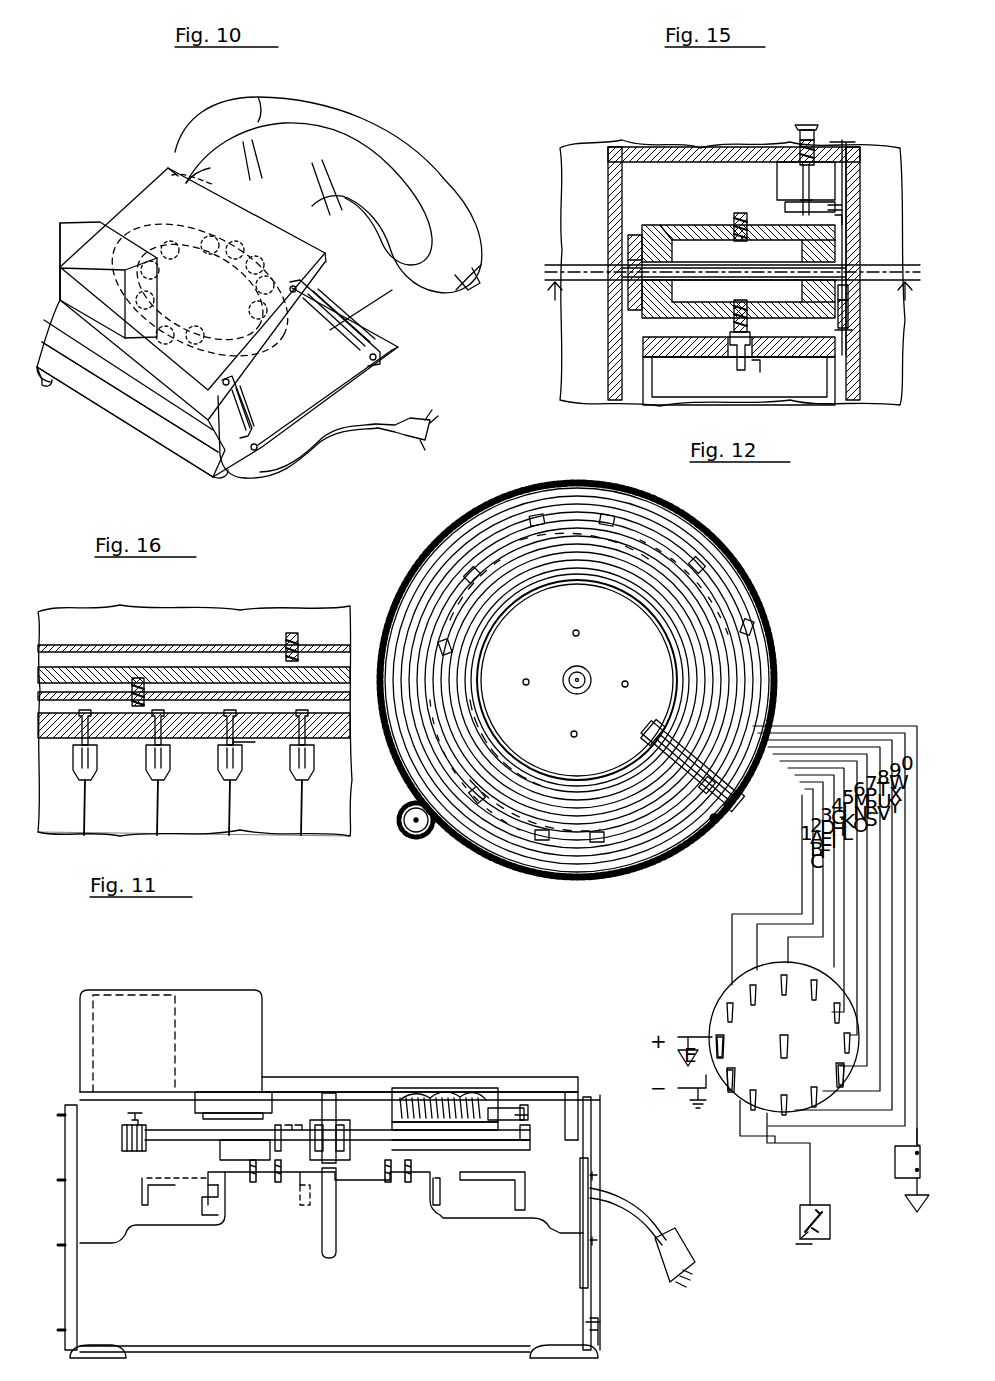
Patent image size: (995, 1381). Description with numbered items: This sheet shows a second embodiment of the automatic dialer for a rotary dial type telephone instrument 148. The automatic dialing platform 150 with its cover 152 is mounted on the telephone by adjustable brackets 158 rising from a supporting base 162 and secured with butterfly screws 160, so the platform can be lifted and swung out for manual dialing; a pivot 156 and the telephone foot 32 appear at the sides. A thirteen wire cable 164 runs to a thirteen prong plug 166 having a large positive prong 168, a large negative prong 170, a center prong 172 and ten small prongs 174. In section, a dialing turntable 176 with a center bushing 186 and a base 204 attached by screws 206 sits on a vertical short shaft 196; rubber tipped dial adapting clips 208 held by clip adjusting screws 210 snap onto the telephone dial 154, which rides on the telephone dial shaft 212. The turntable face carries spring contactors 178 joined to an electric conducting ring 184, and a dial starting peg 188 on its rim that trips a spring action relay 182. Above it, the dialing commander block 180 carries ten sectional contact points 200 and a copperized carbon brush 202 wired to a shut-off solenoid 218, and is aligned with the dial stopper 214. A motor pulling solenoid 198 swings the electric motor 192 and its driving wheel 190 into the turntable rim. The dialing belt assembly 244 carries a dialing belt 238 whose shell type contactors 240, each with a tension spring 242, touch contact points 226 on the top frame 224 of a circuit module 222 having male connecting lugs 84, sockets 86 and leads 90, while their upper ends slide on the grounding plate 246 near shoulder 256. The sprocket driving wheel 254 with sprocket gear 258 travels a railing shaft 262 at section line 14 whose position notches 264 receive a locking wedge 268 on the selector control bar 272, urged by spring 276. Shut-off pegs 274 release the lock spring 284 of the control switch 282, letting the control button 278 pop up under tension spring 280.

In FIG. 15, the section line 14 is at (731, 302).
In FIG. 10, the foot 32 is at (42, 385).
In FIG. 11, the foot 32 is at (105, 1350).
In FIG. 15, the male connecting lug 84 is at (762, 378).
In FIG. 16, the male connecting lug 84 is at (258, 745).
In FIG. 16, the pin socket 86 is at (168, 762).
In FIG. 16, the wire lead 90 is at (304, 795).
In FIG. 10, the dial type telephone instrument 148 is at (118, 388).
In FIG. 11, the dial type telephone instrument 148 is at (560, 1297).
In FIG. 10, the automatic dialing platform 150 is at (178, 400).
In FIG. 11, the automatic dialing platform 150 is at (558, 1078).
In FIG. 10, the cover 152 is at (175, 192).
In FIG. 11, the cover 152 is at (248, 998).
In FIG. 10, the telephone dial 154 is at (182, 248).
In FIG. 12, the telephone dial 154 is at (632, 520).
In FIG. 11, the telephone dial 154 is at (170, 1185).
In FIG. 10, the pivot pin 156 is at (294, 283).
In FIG. 11, the pivot pin 156 is at (596, 1098).
In FIG. 10, the adjustable brackets 158 is at (352, 325).
In FIG. 11, the adjustable brackets 158 is at (592, 1198).
In FIG. 10, the butterfly screws 160 is at (345, 335).
In FIG. 11, the butterfly screws 160 is at (594, 1176).
In FIG. 10, the supporting base 162 is at (372, 365).
In FIG. 11, the supporting base 162 is at (600, 1345).
In FIG. 10, the wire cable 164 is at (292, 458).
In FIG. 11, the wire cable 164 is at (630, 1222).
In FIG. 10, the thirteen prong plug 166 is at (428, 426).
In FIG. 12, the thirteen prong plug 166 is at (722, 1025).
In FIG. 11, the thirteen prong plug 166 is at (688, 1252).
In FIG. 12, the large prong 168 is at (724, 1045).
In FIG. 12, the large prong 170 is at (735, 1075).
In FIG. 12, the center prong 172 is at (788, 1045).
In FIG. 12, the small prongs 174 is at (838, 1075).
In FIG. 12, the dialing turntable 176 is at (758, 522).
In FIG. 11, the dialing turntable 176 is at (522, 1138).
In FIG. 12, the spring contactor 178 is at (752, 630).
In FIG. 11, the spring contactor 178 is at (280, 1135).
In FIG. 12, the dialing commander block 180 is at (648, 730).
In FIG. 11, the dialing commander block 180 is at (490, 1085).
In FIG. 11, the spring action relay 182 is at (505, 1105).
In FIG. 12, the electric conducting ring 184 is at (680, 668).
In FIG. 12, the bushing 186 is at (590, 672).
In FIG. 11, the bushing 186 is at (345, 1108).
In FIG. 12, the dial starting peg 188 is at (720, 830).
In FIG. 11, the dial starting peg 188 is at (532, 1125).
In FIG. 12, the driving wheel 190 is at (425, 835).
In FIG. 11, the driving wheel 190 is at (126, 1153).
In FIG. 11, the electric motor 192 is at (160, 1002).
In FIG. 11, the vertical short shaft 196 is at (330, 1100).
In FIG. 11, the motor pulling solenoid 198 is at (232, 1095).
In FIG. 12, the sectional contact points 200 is at (695, 790).
In FIG. 11, the sectional contact points 200 is at (470, 1152).
In FIG. 11, the copperized carbon brush 202 is at (402, 1135).
In FIG. 11, the turntable base 204 is at (232, 1158).
In FIG. 11, the screws 206 is at (280, 1125).
In FIG. 11, the dial adapting clips 208 is at (270, 1173).
In FIG. 11, the clip adjusting screws 210 is at (408, 1185).
In FIG. 11, the telephone dial shaft 212 is at (322, 1215).
In FIG. 11, the dial stopper 214 is at (510, 1172).
In FIG. 12, the shut-off solenoid 218 is at (895, 1168).
In FIG. 11, the shut-off solenoid 218 is at (380, 1092).
In FIG. 15, the circuit module 222 is at (650, 397).
In FIG. 16, the circuit module 222 is at (268, 815).
In FIG. 15, the top frame 224 is at (822, 345).
In FIG. 16, the top frame 224 is at (125, 740).
In FIG. 15, the contact points 226 is at (736, 368).
In FIG. 16, the contact points 226 is at (84, 740).
In FIG. 15, the dialing belt 238 is at (668, 228).
In FIG. 16, the dialing belt 238 is at (112, 645).
In FIG. 15, the shell type contactor 240 is at (732, 330).
In FIG. 16, the shell type contactor 240 is at (283, 660).
In FIG. 15, the tension spring 242 is at (740, 216).
In FIG. 16, the tension spring 242 is at (294, 633).
In FIG. 15, the dialing belt assembly 244 is at (614, 152).
In FIG. 15, the grounding plate 246 is at (705, 262).
In FIG. 16, the grounding plate 246 is at (220, 670).
In FIG. 15, the sprocket driving wheel 254 is at (632, 237).
In FIG. 15, the shoulder 256 is at (658, 228).
In FIG. 15, the sprocket gear 258 is at (630, 250).
In FIG. 15, the railing shaft 262 is at (605, 282).
In FIG. 15, the position notches 264 is at (840, 268).
In FIG. 15, the locking wedge 268 is at (850, 286).
In FIG. 15, the selector control bar 272 is at (848, 140).
In FIG. 15, the shut-off peg 274 is at (845, 220).
In FIG. 15, the spring 276 is at (850, 320).
In FIG. 15, the control button 278 is at (795, 127).
In FIG. 15, the tension spring 280 is at (816, 140).
In FIG. 15, the control switch 282 is at (777, 180).
In FIG. 15, the lock spring 284 is at (838, 208).